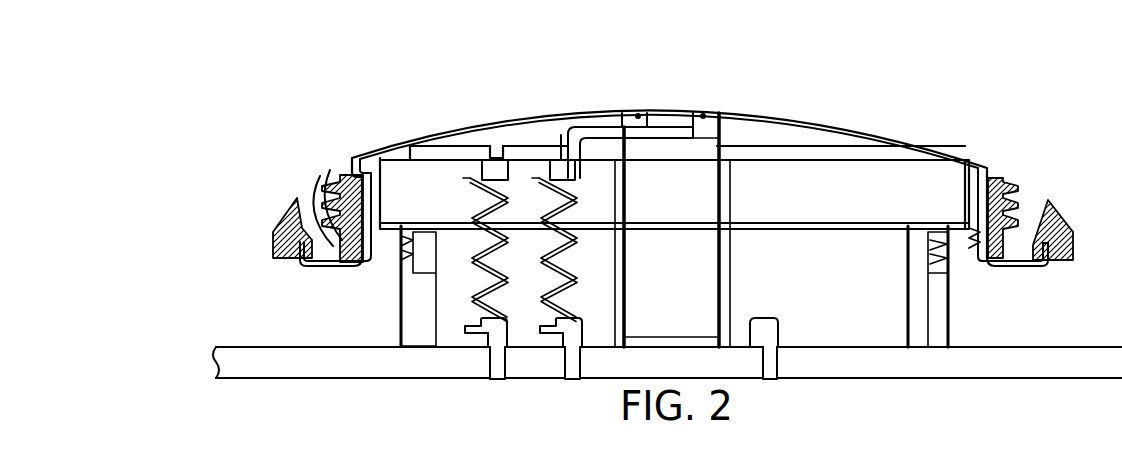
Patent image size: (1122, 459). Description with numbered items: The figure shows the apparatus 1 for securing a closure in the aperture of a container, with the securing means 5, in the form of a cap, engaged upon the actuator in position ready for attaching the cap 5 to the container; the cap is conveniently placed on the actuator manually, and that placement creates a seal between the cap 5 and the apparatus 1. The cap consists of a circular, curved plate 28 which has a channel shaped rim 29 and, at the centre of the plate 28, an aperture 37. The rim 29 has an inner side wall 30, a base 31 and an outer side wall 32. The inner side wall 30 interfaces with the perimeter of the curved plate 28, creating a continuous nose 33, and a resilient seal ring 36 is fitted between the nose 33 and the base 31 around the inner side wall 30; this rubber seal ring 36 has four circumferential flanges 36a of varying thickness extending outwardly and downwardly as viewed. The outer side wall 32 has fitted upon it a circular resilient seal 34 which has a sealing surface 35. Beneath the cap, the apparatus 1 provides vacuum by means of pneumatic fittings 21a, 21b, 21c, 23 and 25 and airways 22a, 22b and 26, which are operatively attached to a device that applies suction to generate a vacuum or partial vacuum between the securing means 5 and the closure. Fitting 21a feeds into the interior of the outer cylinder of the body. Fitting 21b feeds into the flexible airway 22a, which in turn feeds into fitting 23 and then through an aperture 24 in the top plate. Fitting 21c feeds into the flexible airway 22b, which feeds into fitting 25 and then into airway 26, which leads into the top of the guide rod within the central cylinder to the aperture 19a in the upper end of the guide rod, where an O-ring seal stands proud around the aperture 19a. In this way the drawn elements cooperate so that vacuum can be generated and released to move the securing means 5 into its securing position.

The apparatus 1 is at (985, 109).
The securing means 5 is at (802, 115).
The aperture 19a is at (700, 112).
The pneumatic fitting 21a is at (773, 345).
The pneumatic fitting 21b is at (490, 340).
The pneumatic fitting 21c is at (575, 342).
The flexible airway 22a is at (478, 289).
The flexible airway 22b is at (583, 284).
The pneumatic fitting 23 is at (485, 180).
The aperture 24 is at (499, 157).
The pneumatic fitting 25 is at (566, 170).
The airway 26 is at (606, 128).
The curved plate 28 is at (890, 125).
The channel shaped rim 29 is at (1044, 272).
The inner side wall 30 is at (975, 190).
The base 31 is at (1005, 267).
The outer side wall 32 is at (1074, 254).
The nose 33 is at (997, 162).
The circular resilient seal 34 is at (277, 232).
The sealing surface 35 is at (316, 268).
The resilient seal ring 36 is at (350, 175).
The circumferential flanges 36a is at (330, 184).
The aperture 37 is at (668, 110).